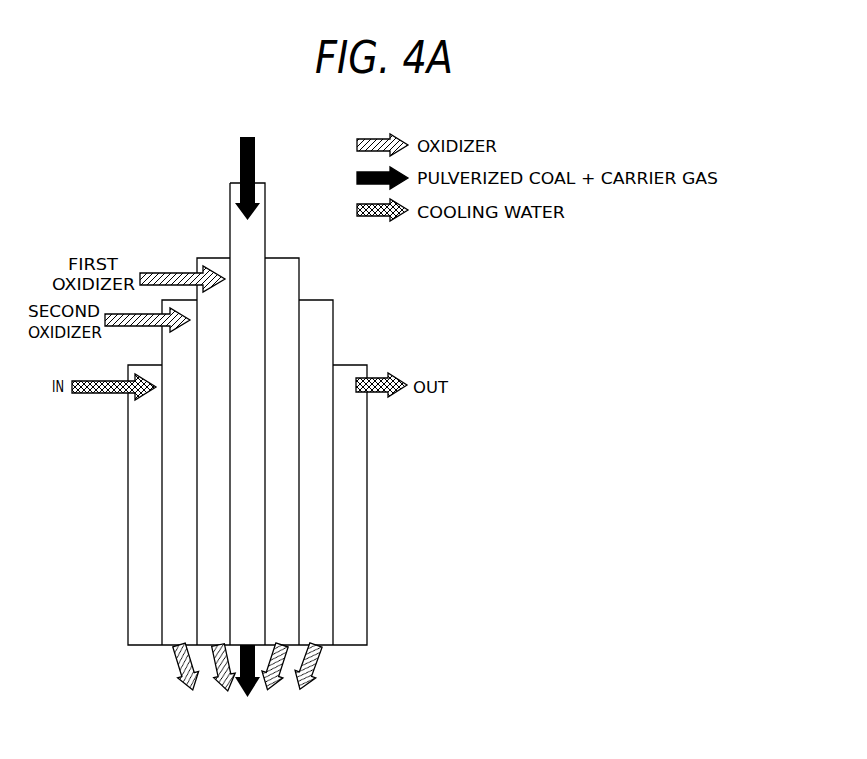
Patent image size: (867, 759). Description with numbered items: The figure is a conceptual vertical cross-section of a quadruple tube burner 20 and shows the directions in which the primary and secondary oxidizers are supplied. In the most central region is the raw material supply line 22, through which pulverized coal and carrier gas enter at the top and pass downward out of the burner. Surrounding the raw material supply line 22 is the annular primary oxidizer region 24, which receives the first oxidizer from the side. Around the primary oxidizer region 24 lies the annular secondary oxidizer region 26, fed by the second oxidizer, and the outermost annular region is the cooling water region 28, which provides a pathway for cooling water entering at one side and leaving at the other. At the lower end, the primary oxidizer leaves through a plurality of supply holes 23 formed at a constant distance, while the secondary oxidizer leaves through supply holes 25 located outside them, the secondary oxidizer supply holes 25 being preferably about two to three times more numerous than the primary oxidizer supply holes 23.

The burner 20 is at (236, 429).
The raw material supply line 22 is at (267, 186).
The primary oxidizer supply holes 23 is at (207, 630).
The primary oxidizer region 24 is at (203, 257).
The secondary oxidizer supply holes 25 is at (171, 631).
The secondary oxidizer region 26 is at (161, 302).
The cooling water region 28 is at (137, 365).